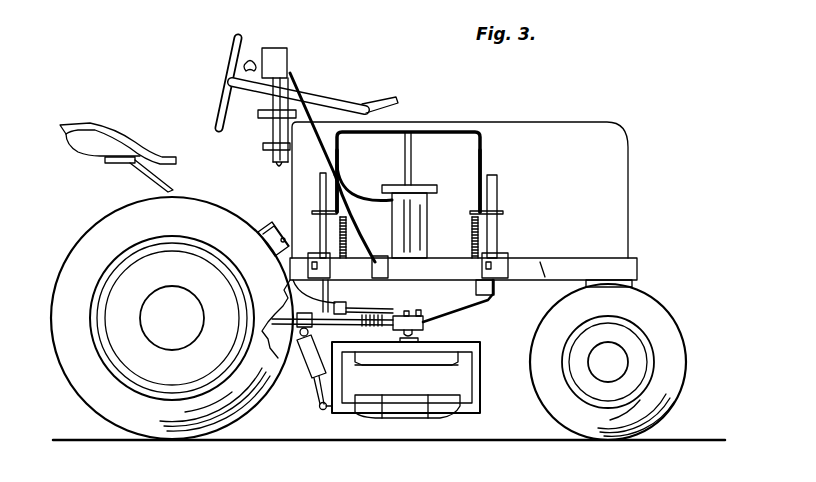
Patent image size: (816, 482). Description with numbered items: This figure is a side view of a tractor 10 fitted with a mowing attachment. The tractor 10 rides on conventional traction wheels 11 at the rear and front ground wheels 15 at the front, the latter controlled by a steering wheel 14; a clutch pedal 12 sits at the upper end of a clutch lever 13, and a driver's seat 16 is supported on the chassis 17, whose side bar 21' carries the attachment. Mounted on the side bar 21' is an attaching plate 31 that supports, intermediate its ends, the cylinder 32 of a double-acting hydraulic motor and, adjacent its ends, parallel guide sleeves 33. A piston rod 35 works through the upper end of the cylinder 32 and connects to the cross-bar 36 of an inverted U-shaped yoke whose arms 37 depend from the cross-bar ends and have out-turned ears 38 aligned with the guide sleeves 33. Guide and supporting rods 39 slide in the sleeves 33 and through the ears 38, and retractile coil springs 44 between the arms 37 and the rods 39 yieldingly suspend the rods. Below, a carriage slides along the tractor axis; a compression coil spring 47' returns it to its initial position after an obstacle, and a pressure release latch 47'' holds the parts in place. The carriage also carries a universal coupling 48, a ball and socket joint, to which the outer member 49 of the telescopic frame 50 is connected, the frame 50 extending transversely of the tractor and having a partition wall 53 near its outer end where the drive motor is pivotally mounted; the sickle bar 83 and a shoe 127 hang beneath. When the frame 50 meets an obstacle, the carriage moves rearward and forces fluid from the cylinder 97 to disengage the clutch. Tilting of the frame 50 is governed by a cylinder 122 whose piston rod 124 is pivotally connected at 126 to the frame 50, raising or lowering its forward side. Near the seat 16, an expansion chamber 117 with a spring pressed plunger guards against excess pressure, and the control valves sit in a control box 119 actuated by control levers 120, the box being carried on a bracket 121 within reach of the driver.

The tractor 10 is at (566, 120).
The traction wheels 11 is at (66, 248).
The clutch pedal 12 is at (258, 239).
The clutch lever 13 is at (270, 278).
The steering wheel 14 is at (232, 52).
The front ground wheels 15 is at (683, 371).
The driver's seat 16 is at (116, 142).
The chassis 17 is at (558, 265).
The side bar 21' is at (552, 249).
The attaching plate 31 is at (358, 260).
The cylinder 32 is at (415, 225).
The guide sleeves 33 is at (315, 252).
The piston rod 35 is at (412, 164).
The cross-bar 36 is at (458, 130).
The arms 37 is at (340, 166).
The out-turned ears 38 is at (314, 210).
The guide and supporting arms or rods 39 is at (322, 178).
The retractile coil springs 44 is at (472, 244).
The compression coil spring 47' is at (332, 327).
The pressure release latch 47'' is at (443, 305).
The universal coupling 48 is at (430, 336).
The outer member 49 is at (482, 406).
The telescopic frame 50 is at (486, 379).
The partition wall 53 is at (344, 383).
The sickle bar 83 is at (402, 418).
The cylinder 97 is at (358, 308).
The expansion chamber 117 is at (270, 136).
The control box 119 is at (284, 53).
The control levers 120 is at (257, 58).
The bracket 121 is at (304, 90).
The cylinder 122 is at (303, 362).
The piston rod 124 is at (315, 392).
The pivotal connection 126 is at (322, 410).
The shoe 127 is at (440, 410).